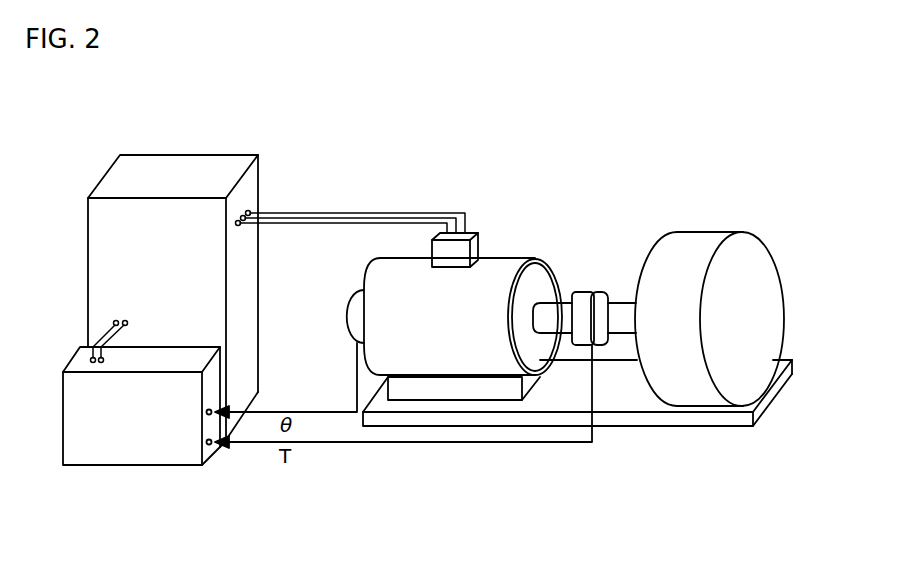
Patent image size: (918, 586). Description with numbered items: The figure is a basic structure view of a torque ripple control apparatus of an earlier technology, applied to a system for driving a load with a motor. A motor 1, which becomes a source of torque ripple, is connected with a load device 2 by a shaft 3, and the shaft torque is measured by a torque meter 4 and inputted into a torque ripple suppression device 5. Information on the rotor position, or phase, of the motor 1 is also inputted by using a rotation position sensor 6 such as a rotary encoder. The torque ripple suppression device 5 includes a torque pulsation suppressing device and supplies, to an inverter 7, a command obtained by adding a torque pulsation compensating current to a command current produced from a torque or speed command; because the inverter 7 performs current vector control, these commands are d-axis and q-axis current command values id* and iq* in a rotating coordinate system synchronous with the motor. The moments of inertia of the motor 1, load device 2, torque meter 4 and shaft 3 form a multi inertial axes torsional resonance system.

The motor 1 is at (443, 357).
The load device 2 is at (678, 380).
The shaft 3 is at (550, 318).
The torque meter 4 is at (590, 290).
The torque ripple suppression device 5 is at (132, 467).
The rotation position sensor 6 is at (347, 317).
The inverter 7 is at (190, 168).